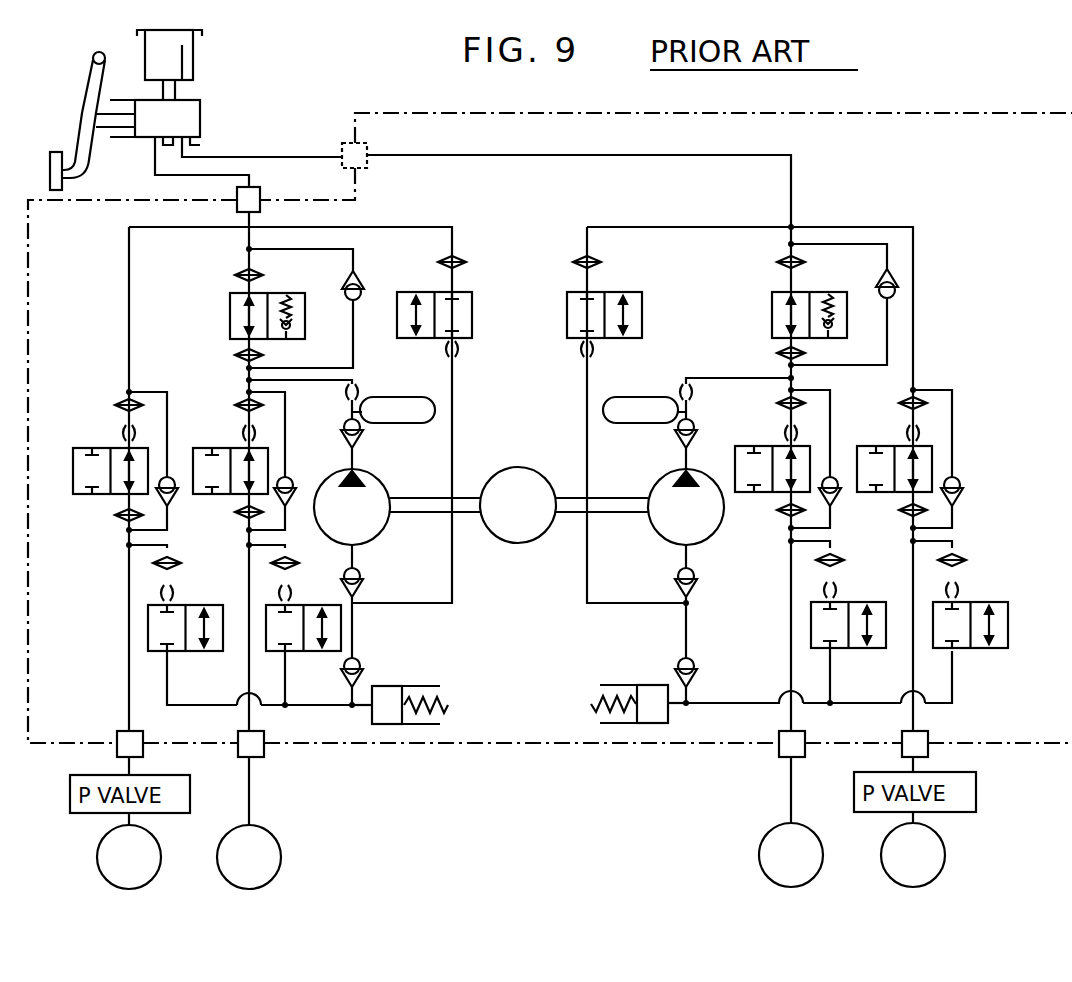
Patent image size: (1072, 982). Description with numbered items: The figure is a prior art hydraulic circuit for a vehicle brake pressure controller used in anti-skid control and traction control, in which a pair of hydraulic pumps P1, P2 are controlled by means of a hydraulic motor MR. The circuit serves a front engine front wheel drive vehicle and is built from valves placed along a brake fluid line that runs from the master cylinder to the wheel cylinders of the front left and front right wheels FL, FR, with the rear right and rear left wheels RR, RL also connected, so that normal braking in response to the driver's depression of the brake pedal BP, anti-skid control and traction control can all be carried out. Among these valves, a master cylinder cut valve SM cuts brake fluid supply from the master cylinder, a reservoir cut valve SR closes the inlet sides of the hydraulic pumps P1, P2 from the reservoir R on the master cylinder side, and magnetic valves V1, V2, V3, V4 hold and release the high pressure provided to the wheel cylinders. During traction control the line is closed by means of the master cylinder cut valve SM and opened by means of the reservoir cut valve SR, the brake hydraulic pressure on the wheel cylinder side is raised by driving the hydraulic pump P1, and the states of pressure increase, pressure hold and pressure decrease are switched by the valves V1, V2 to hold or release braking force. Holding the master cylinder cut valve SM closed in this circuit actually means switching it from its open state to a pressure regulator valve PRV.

The reservoir R is at (196, 60).
The brake pedal BP is at (48, 164).
The master cylinder cut valve SM is at (230, 294).
The pressure regulator valve PRV is at (286, 338).
The reservoir cut valve SR is at (462, 292).
The magnetic valve V1 is at (186, 460).
The magnetic valve V2 is at (302, 612).
The magnetic valve V3 is at (66, 460).
The magnetic valve V4 is at (190, 612).
The hydraulic pump P1 is at (386, 486).
The hydraulic pump P2 is at (652, 486).
The hydraulic motor MR is at (516, 467).
The rear right wheel RR is at (129, 857).
The front left wheel FL is at (249, 857).
The front right wheel FR is at (791, 855).
The rear left wheel RL is at (913, 855).